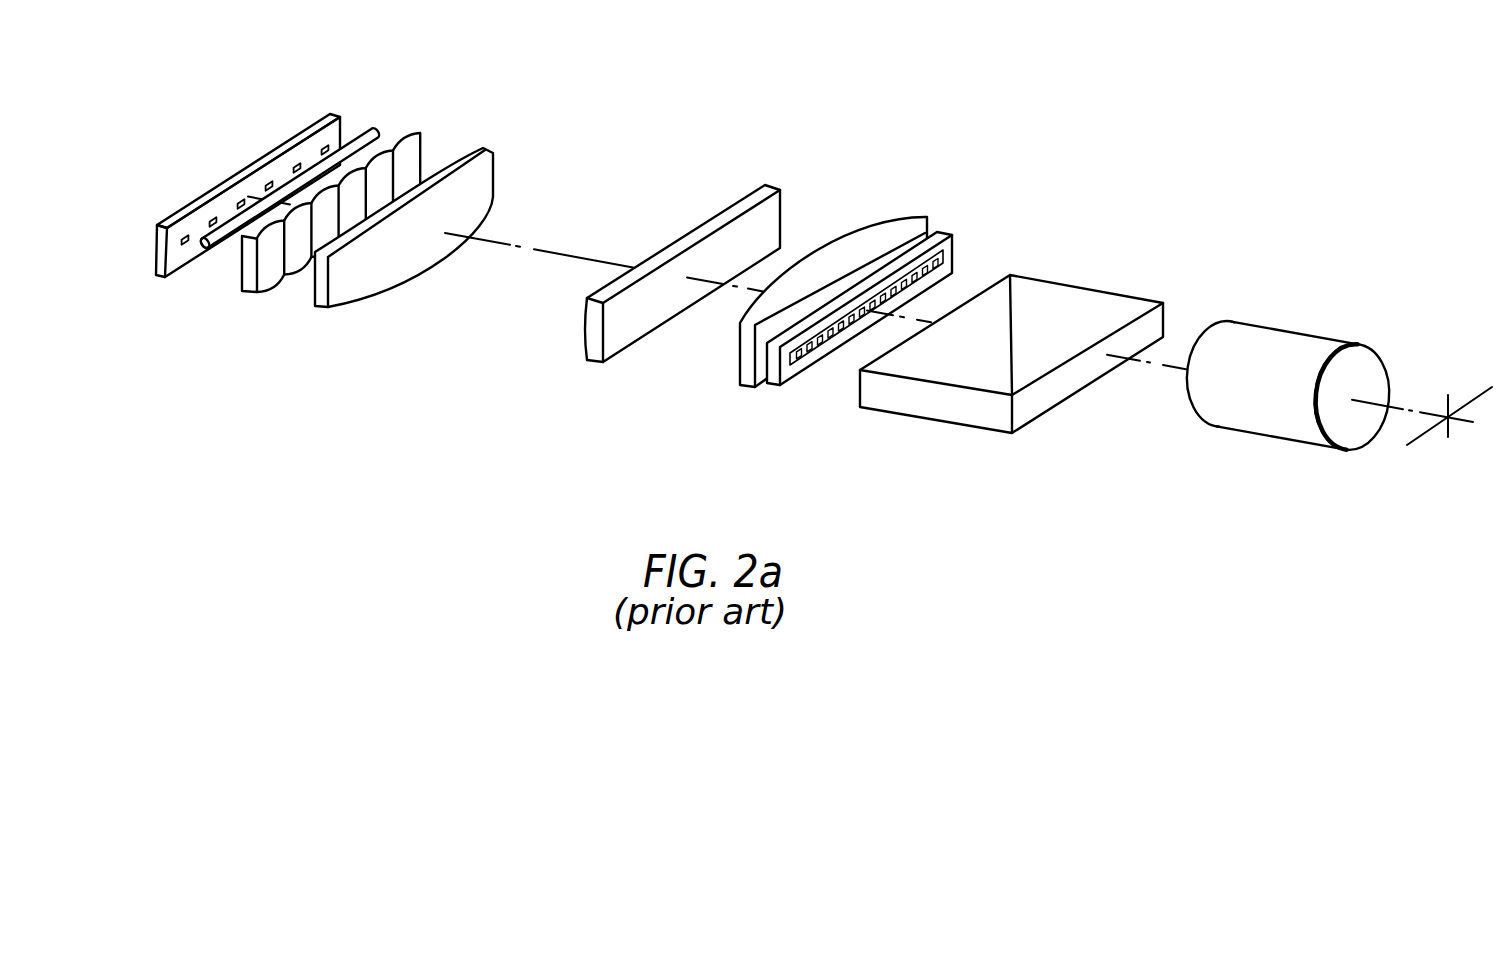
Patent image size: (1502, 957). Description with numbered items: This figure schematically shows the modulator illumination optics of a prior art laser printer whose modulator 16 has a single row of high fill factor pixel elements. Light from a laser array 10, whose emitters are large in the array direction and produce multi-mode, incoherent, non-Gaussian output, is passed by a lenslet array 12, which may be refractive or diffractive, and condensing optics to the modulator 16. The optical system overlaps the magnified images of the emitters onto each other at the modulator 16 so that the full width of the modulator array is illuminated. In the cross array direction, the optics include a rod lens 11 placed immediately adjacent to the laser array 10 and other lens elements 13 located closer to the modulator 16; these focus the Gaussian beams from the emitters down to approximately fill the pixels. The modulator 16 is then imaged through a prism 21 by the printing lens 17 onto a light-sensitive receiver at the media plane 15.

The laser array 10 is at (178, 210).
The rod lens 11 is at (366, 132).
The lenslet array 12 is at (422, 141).
The other lens elements 13 is at (456, 229).
The media plane 15 is at (1457, 403).
The modulator 16 is at (953, 248).
The printing lens 17 is at (1307, 350).
The prism 21 is at (1095, 288).